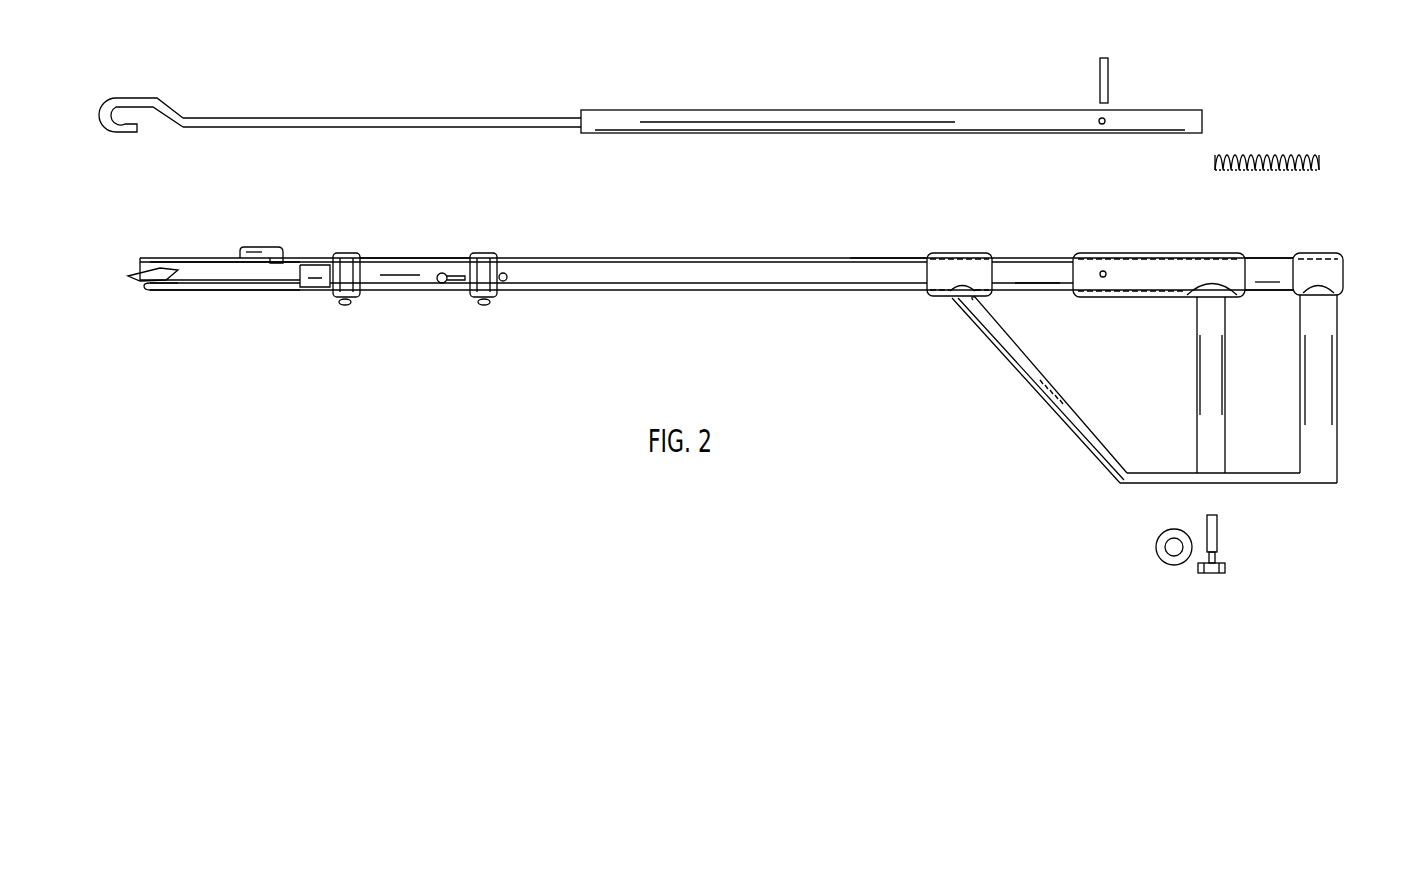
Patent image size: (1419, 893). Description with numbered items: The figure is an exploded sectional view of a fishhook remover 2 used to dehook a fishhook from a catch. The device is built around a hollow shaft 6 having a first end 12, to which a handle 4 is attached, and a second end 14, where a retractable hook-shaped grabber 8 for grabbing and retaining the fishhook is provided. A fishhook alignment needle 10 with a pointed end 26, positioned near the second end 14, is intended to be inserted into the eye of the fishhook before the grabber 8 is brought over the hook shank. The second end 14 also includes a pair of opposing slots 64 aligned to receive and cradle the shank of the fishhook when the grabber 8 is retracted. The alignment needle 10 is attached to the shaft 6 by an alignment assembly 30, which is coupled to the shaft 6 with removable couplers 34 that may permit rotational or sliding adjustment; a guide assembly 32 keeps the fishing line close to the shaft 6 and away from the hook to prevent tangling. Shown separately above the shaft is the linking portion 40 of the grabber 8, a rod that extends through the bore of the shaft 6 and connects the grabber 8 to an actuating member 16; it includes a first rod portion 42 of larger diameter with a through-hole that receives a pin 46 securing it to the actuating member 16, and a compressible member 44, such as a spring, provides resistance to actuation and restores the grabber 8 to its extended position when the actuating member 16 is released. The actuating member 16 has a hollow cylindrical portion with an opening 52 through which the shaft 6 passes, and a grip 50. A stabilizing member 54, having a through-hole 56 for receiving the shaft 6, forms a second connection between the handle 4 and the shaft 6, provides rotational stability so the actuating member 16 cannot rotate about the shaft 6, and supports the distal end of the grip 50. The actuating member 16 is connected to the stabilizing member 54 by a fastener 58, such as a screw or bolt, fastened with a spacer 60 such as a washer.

The fishhook remover 2 is at (621, 230).
The handle 4 is at (1322, 322).
The shaft 6 is at (911, 268).
The retractable hook-shaped grabber 8 is at (104, 109).
The fishhook alignment needle 10 is at (193, 270).
The first end 12 is at (1282, 267).
The second end 14 is at (171, 292).
The actuating member 16 is at (1172, 249).
The pointed end 26 is at (136, 266).
The alignment assembly 30 is at (420, 268).
The guide assembly 32 is at (264, 250).
The removable coupler 34 is at (477, 297).
The linking portion 40 is at (877, 84).
The first rod portion 42 is at (1051, 118).
The compressible member 44 is at (1266, 153).
The pin 46 is at (1109, 72).
The grip 50 is at (1210, 386).
The opening 52 is at (1067, 274).
The stabilizing member 54 is at (1037, 382).
The through-hole 56 is at (925, 276).
The fastener 58 is at (1225, 566).
The spacer 60 is at (1157, 533).
The opposing slots 64 is at (137, 282).